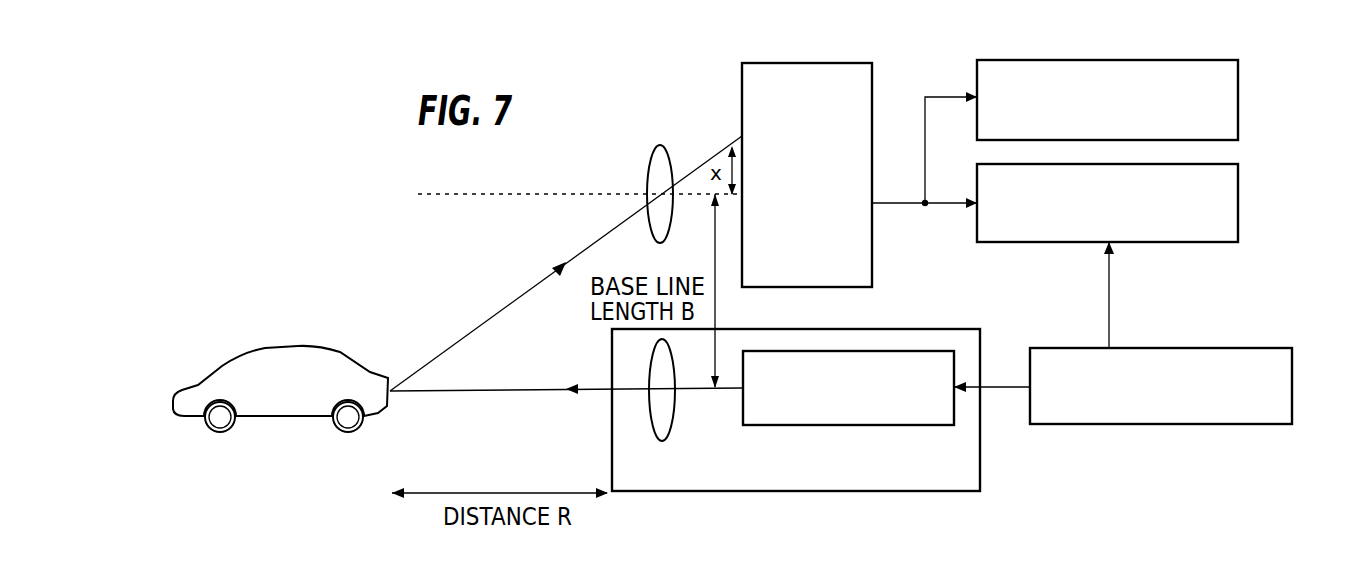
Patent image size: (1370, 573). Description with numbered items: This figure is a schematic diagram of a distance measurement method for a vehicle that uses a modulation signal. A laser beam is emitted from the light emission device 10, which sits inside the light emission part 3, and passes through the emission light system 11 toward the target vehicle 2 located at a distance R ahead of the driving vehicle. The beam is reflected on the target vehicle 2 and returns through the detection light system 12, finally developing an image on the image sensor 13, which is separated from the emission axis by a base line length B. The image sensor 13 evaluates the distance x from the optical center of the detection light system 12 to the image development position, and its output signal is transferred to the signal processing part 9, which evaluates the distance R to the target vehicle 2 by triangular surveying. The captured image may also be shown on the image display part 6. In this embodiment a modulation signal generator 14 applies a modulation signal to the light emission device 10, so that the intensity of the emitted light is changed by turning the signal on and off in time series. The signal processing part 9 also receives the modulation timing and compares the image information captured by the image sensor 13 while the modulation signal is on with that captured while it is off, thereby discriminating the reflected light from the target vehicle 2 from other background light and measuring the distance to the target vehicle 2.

The target vehicle 2 is at (258, 348).
The light emission part 3 is at (982, 458).
The image display part 6 is at (1240, 82).
The signal processing part 9 is at (1240, 187).
The light emission device 10 is at (914, 350).
The emission light system 11 is at (676, 415).
The detection light system 12 is at (651, 158).
The image sensor 13 is at (818, 62).
The modulation signal generator 14 is at (1294, 376).